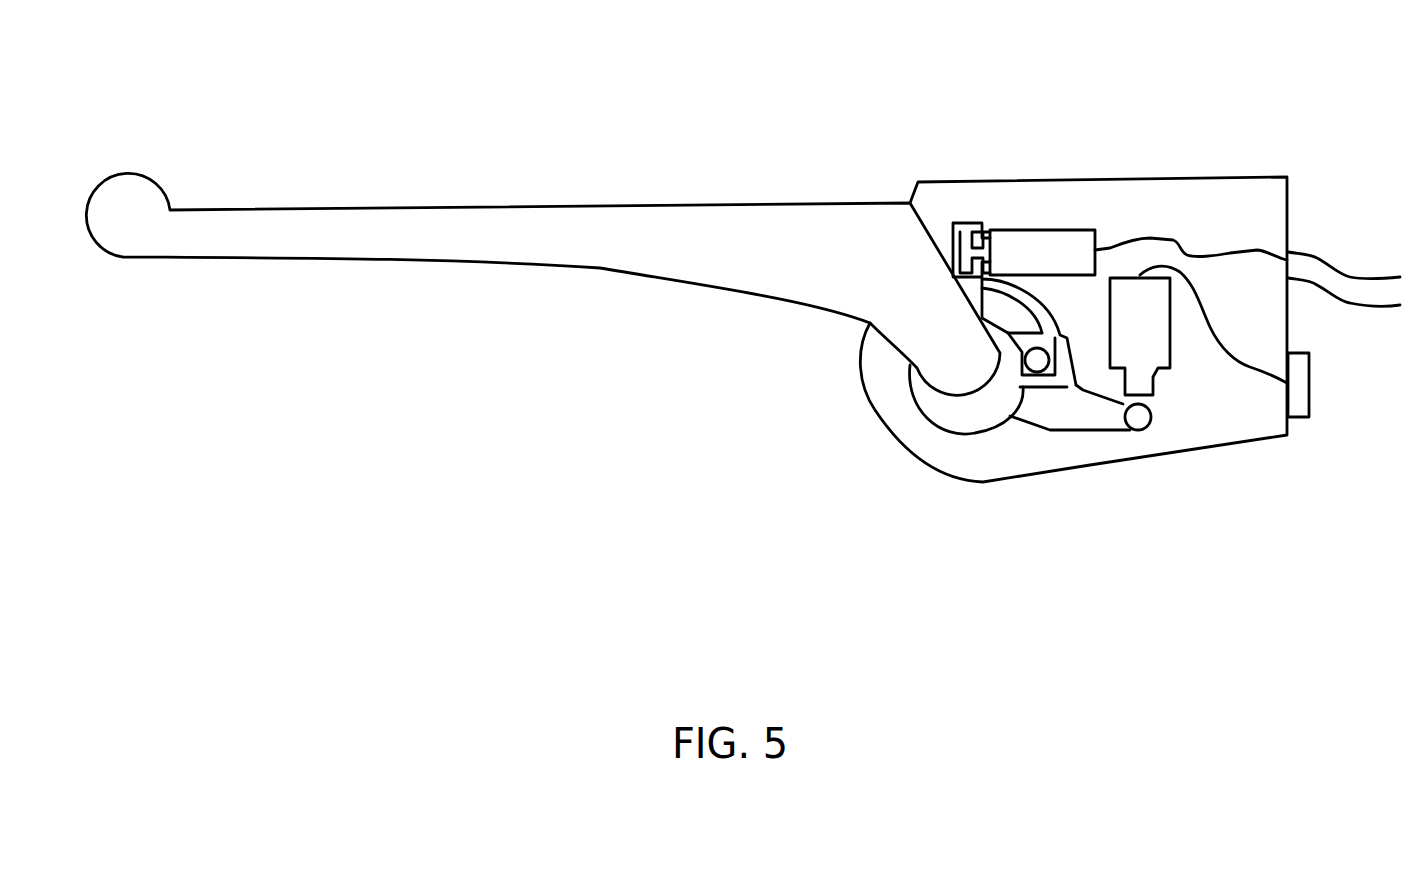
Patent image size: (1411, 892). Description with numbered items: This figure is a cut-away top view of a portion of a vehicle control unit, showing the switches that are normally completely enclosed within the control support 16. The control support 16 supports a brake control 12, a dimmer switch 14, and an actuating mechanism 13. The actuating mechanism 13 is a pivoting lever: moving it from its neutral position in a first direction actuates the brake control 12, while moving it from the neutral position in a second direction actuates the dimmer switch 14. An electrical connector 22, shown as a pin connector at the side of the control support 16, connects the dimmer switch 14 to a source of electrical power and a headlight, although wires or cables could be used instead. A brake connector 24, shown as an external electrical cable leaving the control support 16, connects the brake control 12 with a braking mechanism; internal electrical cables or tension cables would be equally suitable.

The brake control 12 is at (1157, 373).
The actuating mechanism 13 is at (287, 208).
The dimmer switch 14 is at (1027, 230).
The control support 16 is at (1027, 483).
The electrical connector 22 is at (1297, 420).
The brake connector 24 is at (1332, 263).